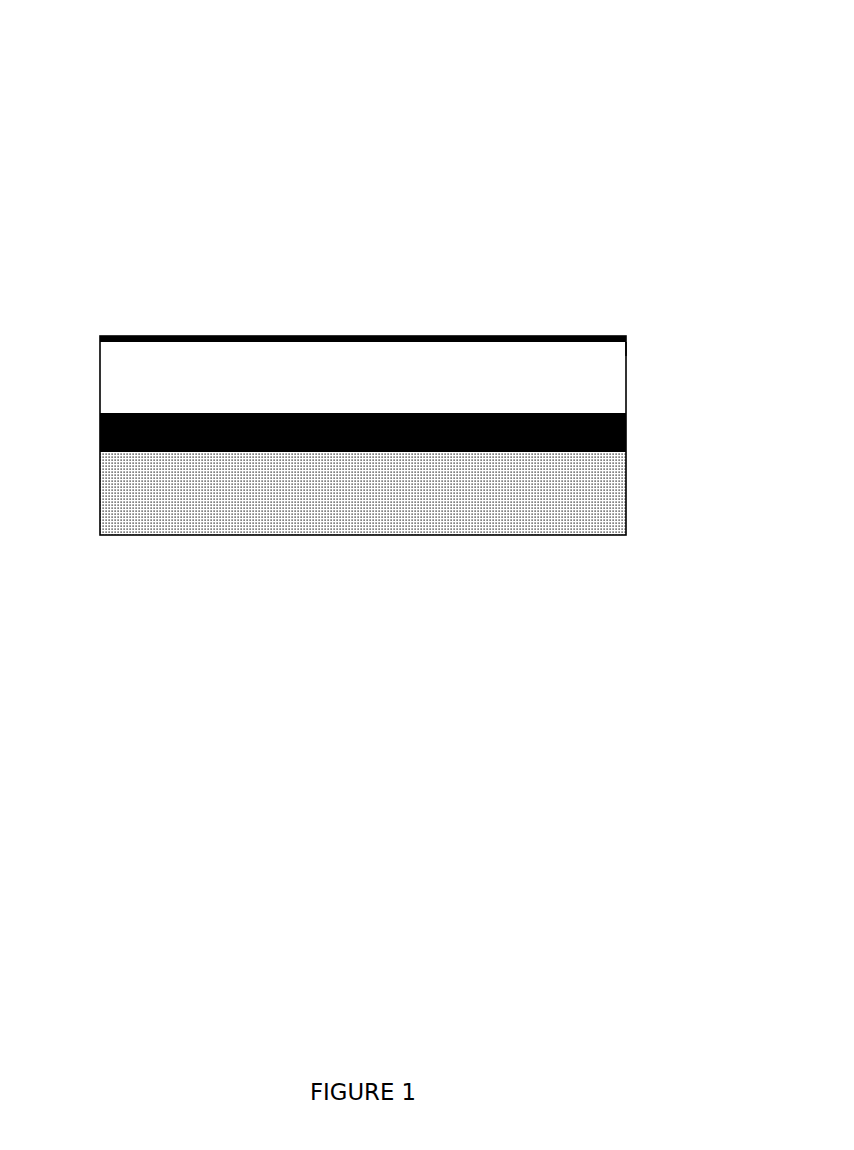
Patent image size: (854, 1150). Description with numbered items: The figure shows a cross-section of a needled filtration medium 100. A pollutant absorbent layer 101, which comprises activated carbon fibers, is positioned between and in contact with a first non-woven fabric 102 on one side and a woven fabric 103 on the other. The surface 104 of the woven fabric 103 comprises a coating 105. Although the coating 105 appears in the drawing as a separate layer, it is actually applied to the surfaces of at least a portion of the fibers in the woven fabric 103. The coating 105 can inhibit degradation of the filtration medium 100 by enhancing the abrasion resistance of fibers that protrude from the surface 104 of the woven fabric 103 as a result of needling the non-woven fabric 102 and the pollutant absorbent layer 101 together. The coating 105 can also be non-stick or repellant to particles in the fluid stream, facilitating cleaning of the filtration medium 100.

The filtration medium 100 is at (130, 128).
The pollutant absorbent layer 101 is at (626, 432).
The first non-woven fabric 102 is at (363, 493).
The woven fabric 103 is at (363, 377).
The surface 104 is at (626, 347).
The coating 105 is at (138, 332).